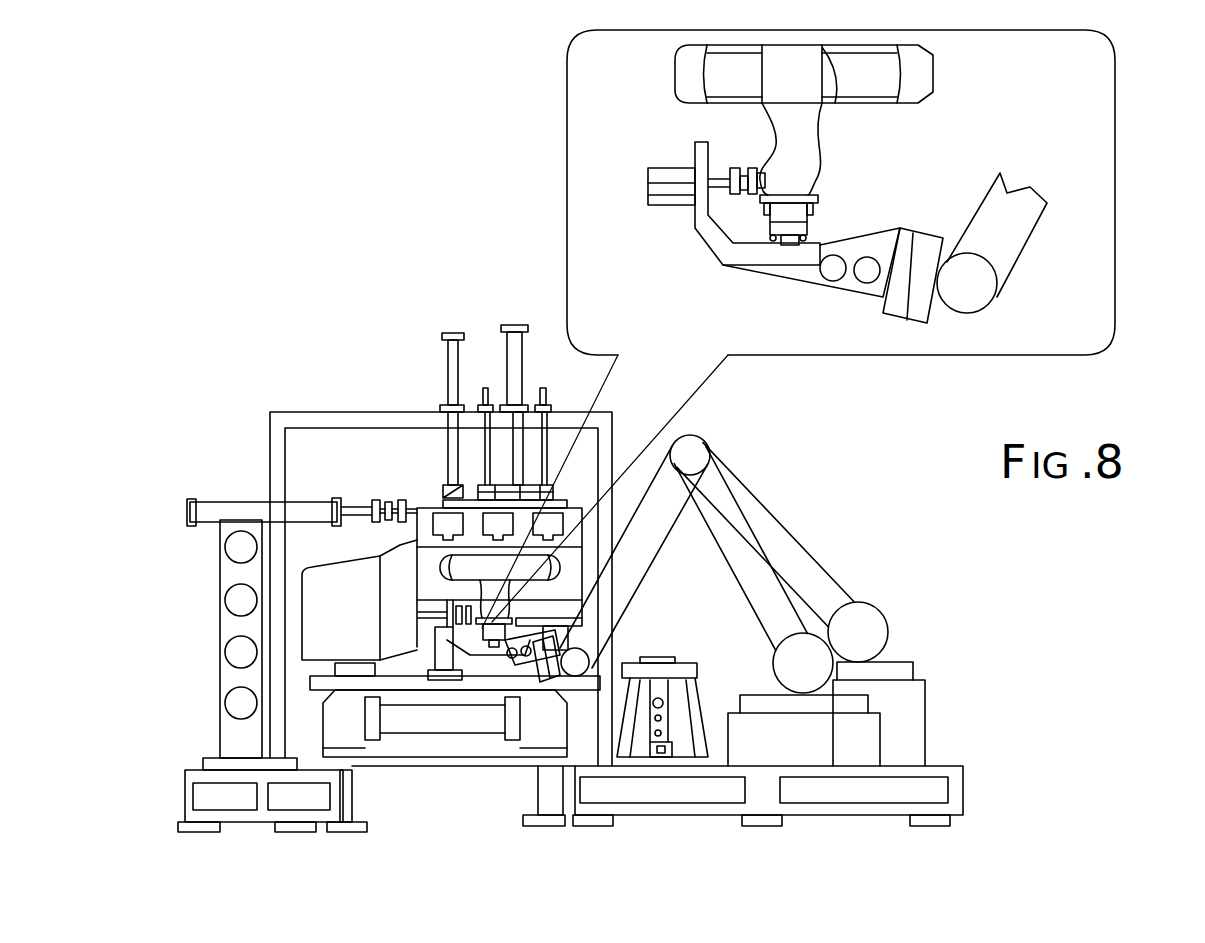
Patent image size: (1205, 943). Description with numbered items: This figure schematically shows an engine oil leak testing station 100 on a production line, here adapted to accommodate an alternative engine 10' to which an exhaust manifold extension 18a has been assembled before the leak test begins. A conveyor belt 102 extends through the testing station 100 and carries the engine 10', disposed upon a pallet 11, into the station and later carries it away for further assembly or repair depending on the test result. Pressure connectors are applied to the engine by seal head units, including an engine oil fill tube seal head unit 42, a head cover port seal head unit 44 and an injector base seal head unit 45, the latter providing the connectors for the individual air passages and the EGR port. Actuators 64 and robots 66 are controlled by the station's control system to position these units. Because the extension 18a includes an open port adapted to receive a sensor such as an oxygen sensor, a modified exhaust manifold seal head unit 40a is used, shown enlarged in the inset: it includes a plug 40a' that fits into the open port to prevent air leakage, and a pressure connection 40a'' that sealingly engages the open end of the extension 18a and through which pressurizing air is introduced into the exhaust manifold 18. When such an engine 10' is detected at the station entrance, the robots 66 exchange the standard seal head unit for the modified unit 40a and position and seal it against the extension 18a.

The engine oil leak testing station 100 is at (258, 275).
The actuators 64 is at (205, 500).
The engine oil fill tube seal head unit 42 is at (430, 467).
The head cover port seal head unit 44 is at (375, 485).
The injector base seal head unit 45 is at (573, 477).
The alternative engine 10' is at (280, 600).
The pallet 11 is at (326, 688).
The conveyor belt 102 is at (437, 722).
The robots 66 is at (802, 553).
The exhaust manifold 18 is at (880, 73).
The exhaust manifold extension 18a is at (822, 157).
The modified exhaust manifold seal head unit 40a is at (624, 411).
The plug 40a' is at (591, 363).
The pressure connection 40a'' is at (734, 422).